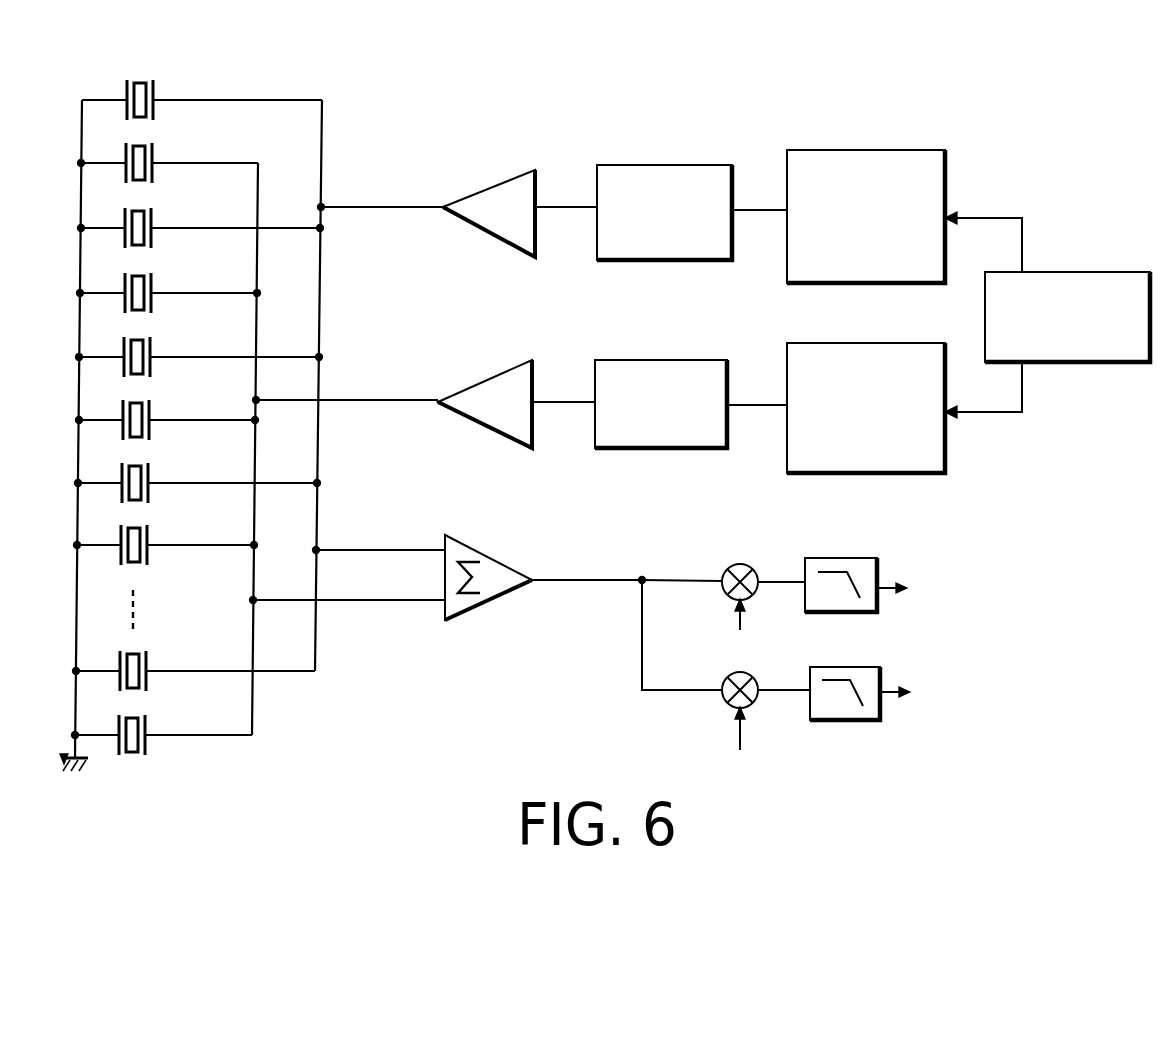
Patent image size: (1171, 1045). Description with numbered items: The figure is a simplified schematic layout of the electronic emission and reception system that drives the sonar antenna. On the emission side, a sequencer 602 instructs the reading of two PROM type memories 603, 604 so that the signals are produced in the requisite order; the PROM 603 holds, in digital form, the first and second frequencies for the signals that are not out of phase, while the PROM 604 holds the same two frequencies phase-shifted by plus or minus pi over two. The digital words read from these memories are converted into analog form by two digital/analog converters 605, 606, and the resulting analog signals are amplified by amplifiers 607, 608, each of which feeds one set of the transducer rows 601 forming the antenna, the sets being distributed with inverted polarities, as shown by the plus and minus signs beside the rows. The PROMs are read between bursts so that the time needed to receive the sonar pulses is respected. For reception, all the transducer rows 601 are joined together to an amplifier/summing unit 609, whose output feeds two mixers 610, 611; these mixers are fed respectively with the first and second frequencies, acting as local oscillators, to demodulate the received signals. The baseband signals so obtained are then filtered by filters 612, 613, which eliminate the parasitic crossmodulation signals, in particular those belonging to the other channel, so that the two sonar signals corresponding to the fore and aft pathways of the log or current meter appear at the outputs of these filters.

The transducer rows 601 is at (141, 93).
The sequencer 602 is at (1082, 272).
The PROM memory 603 is at (870, 157).
The PROM memory 604 is at (850, 348).
The digital/analog converter 605 is at (667, 167).
The digital/analog converter 606 is at (642, 367).
The amplifier 607 is at (508, 185).
The amplifier 608 is at (507, 378).
The amplifier/summing unit 609 is at (500, 595).
The mixer 610 is at (747, 562).
The mixer 611 is at (722, 710).
The filter 612 is at (857, 560).
The filter 613 is at (838, 667).